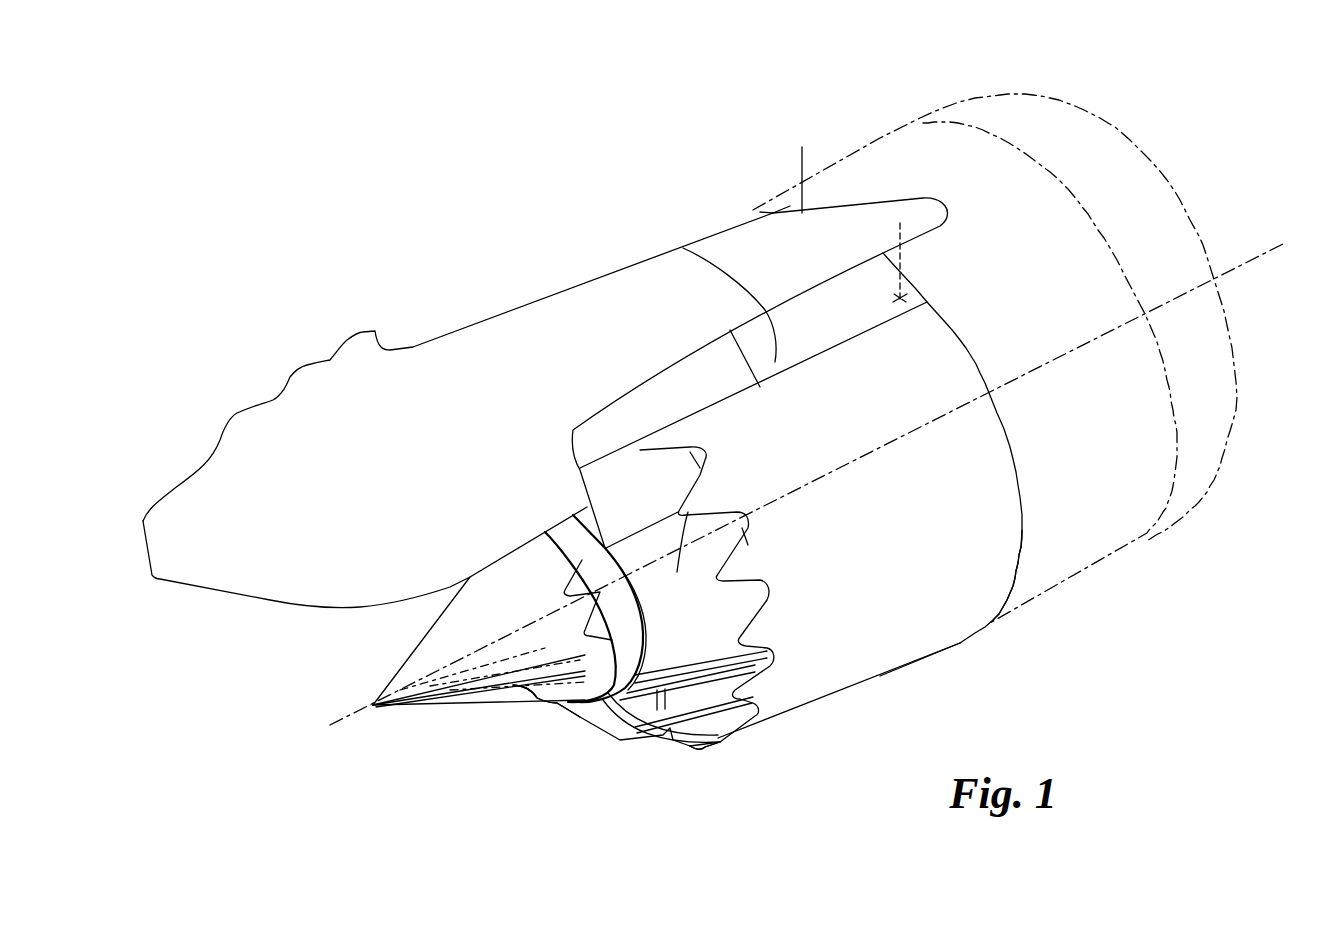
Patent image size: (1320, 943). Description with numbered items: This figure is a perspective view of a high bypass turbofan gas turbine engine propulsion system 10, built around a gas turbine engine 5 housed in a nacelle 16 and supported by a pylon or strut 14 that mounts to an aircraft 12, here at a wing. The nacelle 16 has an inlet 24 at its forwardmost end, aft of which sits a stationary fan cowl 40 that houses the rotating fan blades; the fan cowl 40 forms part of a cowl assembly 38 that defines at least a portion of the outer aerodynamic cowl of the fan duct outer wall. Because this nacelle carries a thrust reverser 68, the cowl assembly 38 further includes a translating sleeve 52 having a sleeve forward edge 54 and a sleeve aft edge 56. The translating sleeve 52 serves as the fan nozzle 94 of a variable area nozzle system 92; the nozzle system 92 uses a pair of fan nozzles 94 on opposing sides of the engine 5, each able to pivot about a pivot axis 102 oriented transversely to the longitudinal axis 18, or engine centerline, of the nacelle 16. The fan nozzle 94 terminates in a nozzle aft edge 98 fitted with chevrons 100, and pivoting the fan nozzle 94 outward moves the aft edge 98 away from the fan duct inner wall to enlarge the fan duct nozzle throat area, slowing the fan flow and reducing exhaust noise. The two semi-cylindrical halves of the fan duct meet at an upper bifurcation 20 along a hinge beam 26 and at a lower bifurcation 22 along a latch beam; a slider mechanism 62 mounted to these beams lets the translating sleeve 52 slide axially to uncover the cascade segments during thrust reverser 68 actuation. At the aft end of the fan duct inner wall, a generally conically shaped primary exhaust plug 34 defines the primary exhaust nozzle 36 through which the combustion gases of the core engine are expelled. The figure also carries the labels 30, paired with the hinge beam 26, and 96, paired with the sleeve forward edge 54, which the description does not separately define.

The gas turbine engine 5 is at (587, 124).
The turbofan gas turbine engine propulsion system 10 is at (608, 151).
The aircraft 12 is at (304, 245).
The pylon or strut 14 is at (458, 410).
The nacelle 16 is at (853, 153).
The longitudinal axis 18 is at (326, 728).
The upper bifurcation 20 is at (615, 478).
The lower bifurcation 22 is at (683, 700).
The inlet 24 is at (1195, 497).
The hinge beam 26 is at (789, 252).
The fairing 30 is at (830, 320).
The primary exhaust plug 34 is at (440, 683).
The primary exhaust nozzle 36 is at (556, 690).
The cowl assembly 38 is at (843, 757).
The stationary fan cowl 40 is at (1090, 572).
The translating sleeve 52 is at (932, 678).
The sleeve forward edge 54 is at (1031, 599).
The sleeve aft edge 56 is at (707, 723).
The slider mechanism 62 is at (683, 248).
The thrust reverser 68 is at (878, 678).
The variable area nozzle system 92 is at (775, 742).
The fan nozzle 94 is at (932, 678).
The outer trailing edge 96 is at (1010, 597).
The nozzle aft edge 98 is at (740, 637).
The chevrons 100 is at (733, 635).
The pivot axis 102 is at (802, 158).